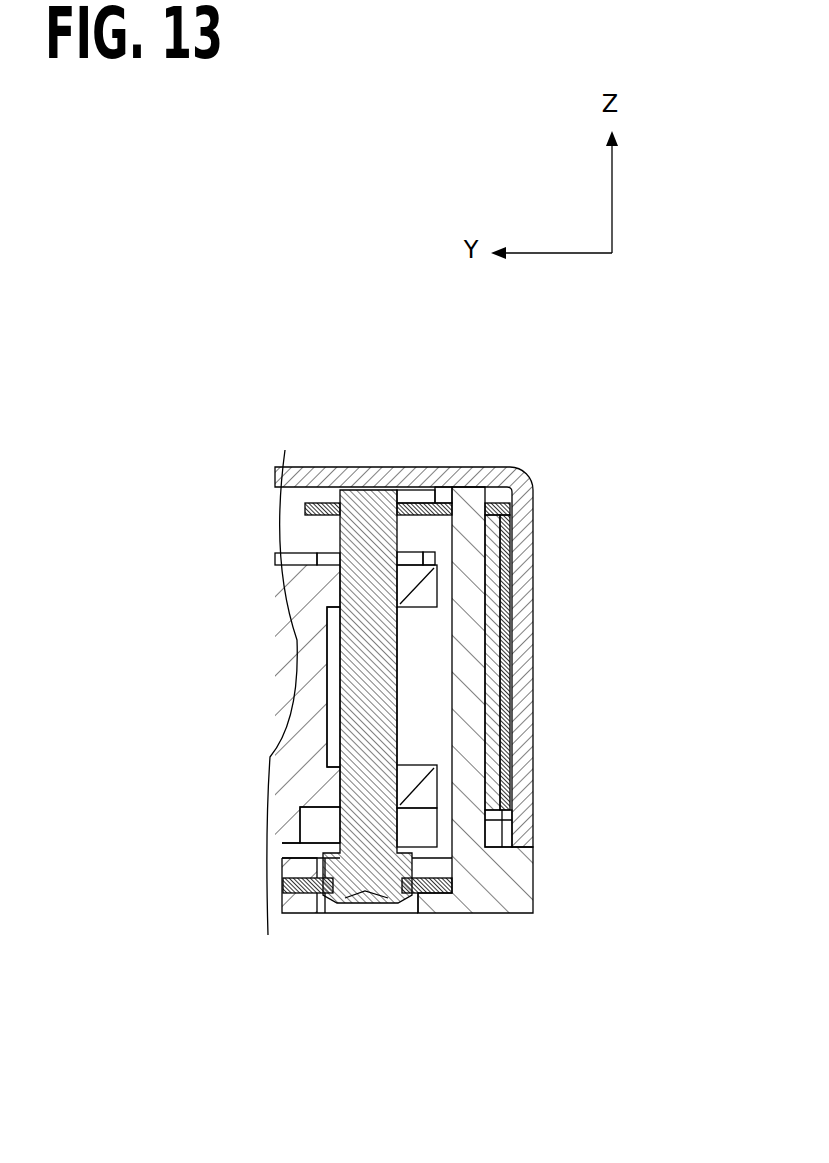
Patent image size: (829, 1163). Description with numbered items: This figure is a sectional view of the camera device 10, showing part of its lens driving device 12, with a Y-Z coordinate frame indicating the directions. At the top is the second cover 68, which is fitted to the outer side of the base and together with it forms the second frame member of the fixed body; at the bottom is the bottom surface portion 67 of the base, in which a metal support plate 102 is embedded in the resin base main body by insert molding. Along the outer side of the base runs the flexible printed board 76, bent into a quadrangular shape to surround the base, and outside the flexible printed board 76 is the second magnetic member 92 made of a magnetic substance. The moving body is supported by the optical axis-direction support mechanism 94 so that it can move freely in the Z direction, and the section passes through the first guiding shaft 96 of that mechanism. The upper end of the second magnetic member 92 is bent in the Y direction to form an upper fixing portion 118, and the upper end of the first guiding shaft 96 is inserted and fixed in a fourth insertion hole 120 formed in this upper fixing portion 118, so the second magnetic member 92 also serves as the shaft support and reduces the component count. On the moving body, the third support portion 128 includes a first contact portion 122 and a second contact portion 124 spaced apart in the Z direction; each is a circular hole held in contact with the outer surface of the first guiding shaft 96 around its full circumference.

The camera device 10 is at (576, 445).
The lens driving device 12 is at (309, 457).
The bottom surface portion 67 is at (285, 903).
The second cover 68 is at (449, 479).
The flexible printed board 76 is at (500, 600).
The second magnetic member 92 is at (513, 528).
The optical axis-direction support mechanism 94 is at (408, 652).
The first guiding shaft 96 is at (398, 717).
The support plate 102 is at (427, 893).
The upper fixing portion 118 is at (323, 500).
The fourth insertion hole 120 is at (385, 491).
The first contact portion 122 is at (400, 546).
The second contact portion 124 is at (397, 828).
The third support portion 128 is at (422, 783).